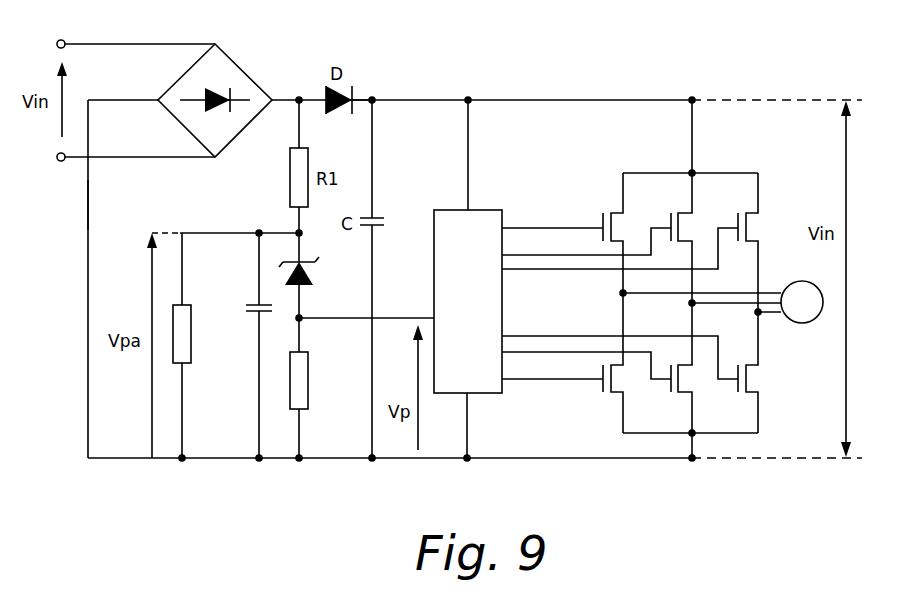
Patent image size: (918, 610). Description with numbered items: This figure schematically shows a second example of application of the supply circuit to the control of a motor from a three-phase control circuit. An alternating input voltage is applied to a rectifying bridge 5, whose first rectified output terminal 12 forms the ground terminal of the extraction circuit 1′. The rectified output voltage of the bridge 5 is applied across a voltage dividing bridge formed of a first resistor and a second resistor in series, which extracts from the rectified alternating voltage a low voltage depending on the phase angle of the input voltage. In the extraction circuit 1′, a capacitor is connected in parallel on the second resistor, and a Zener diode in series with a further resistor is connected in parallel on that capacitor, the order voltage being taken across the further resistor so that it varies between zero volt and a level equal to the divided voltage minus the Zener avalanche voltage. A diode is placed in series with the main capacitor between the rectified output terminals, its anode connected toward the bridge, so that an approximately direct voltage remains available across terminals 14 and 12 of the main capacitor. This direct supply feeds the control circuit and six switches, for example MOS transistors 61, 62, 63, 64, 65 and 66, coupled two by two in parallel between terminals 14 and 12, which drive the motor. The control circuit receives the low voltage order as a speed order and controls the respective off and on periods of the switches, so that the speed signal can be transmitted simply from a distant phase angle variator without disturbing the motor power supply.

The bridge 5 is at (250, 62).
The terminal 14 is at (468, 100).
The circuit 1′ is at (258, 208).
The first rectified output terminal 12 is at (88, 203).
The switch 65 is at (611, 213).
The switch 63 is at (678, 213).
The switch 61 is at (746, 213).
The switch 66 is at (611, 392).
The switch 64 is at (678, 392).
The switch 62 is at (746, 392).